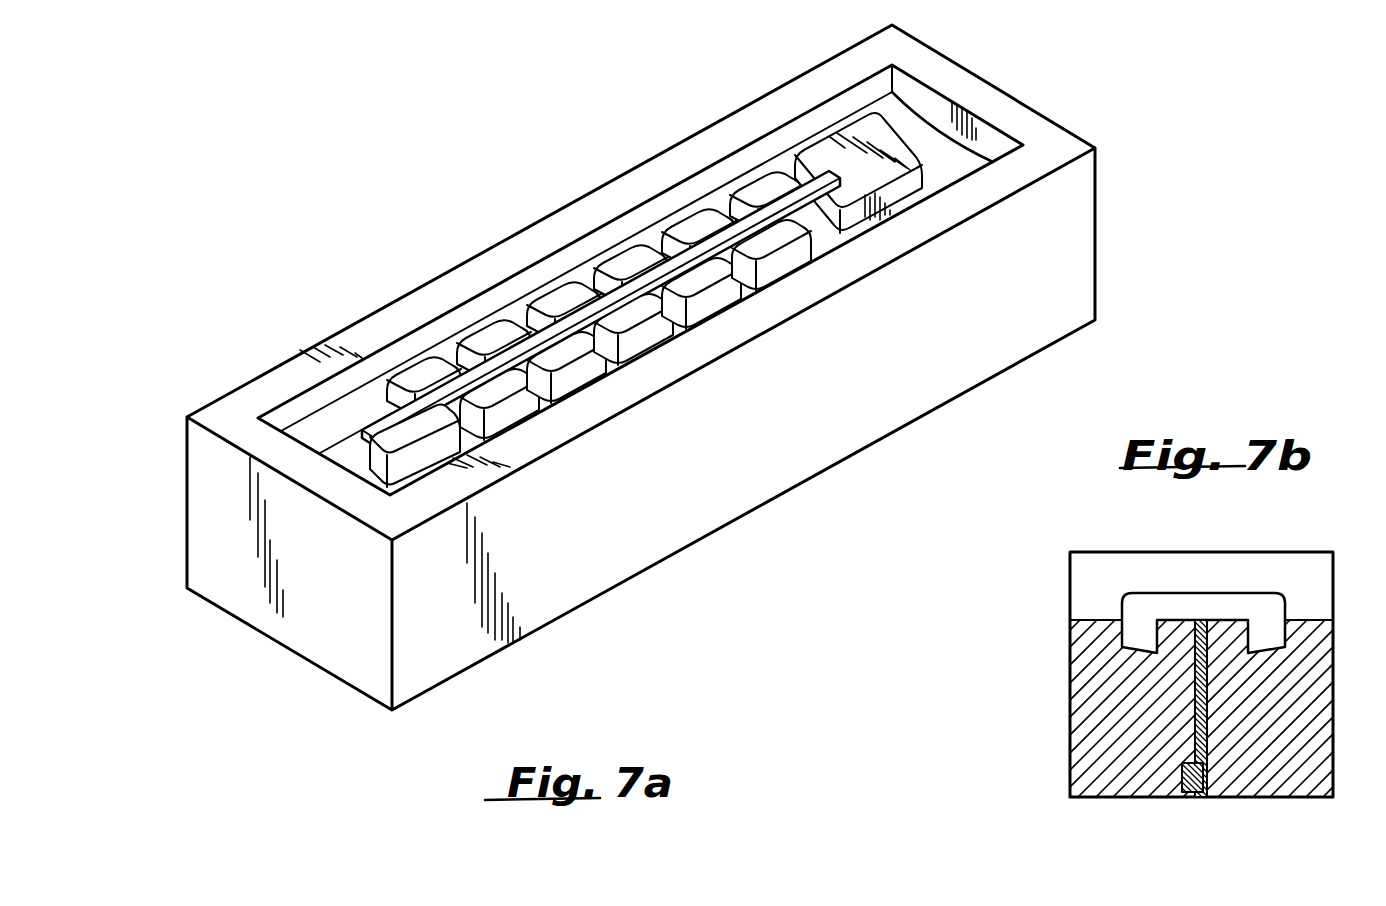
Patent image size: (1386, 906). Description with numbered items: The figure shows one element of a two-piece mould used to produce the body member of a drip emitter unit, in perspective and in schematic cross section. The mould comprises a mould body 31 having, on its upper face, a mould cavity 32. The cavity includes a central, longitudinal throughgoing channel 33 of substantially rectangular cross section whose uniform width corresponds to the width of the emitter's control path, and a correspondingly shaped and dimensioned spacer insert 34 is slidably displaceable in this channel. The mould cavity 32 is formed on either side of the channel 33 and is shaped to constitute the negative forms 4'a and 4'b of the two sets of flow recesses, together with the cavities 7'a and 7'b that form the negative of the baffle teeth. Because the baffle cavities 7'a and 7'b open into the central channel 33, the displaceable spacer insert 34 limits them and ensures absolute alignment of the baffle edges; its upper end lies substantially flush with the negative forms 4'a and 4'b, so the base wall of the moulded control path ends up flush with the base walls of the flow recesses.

In FIG. 7A, the mould body 31 is at (1073, 217).
In FIG. 7B, the mould body 31 is at (1087, 713).
In FIG. 7A, the mould cavity 32 is at (898, 98).
In FIG. 7B, the central longitudinal throughgoing channel 33 is at (1222, 677).
In FIG. 7A, the spacer insert 34 is at (560, 292).
In FIG. 7B, the spacer insert 34 is at (1210, 722).
In FIG. 7A, the negative form of flow recesses 4'a is at (668, 182).
In FIG. 7A, the negative form of flow recesses 4'b is at (704, 323).
In FIG. 7A, the baffle cavity 7'a is at (403, 333).
In FIG. 7A, the baffle cavity 7'b is at (484, 456).